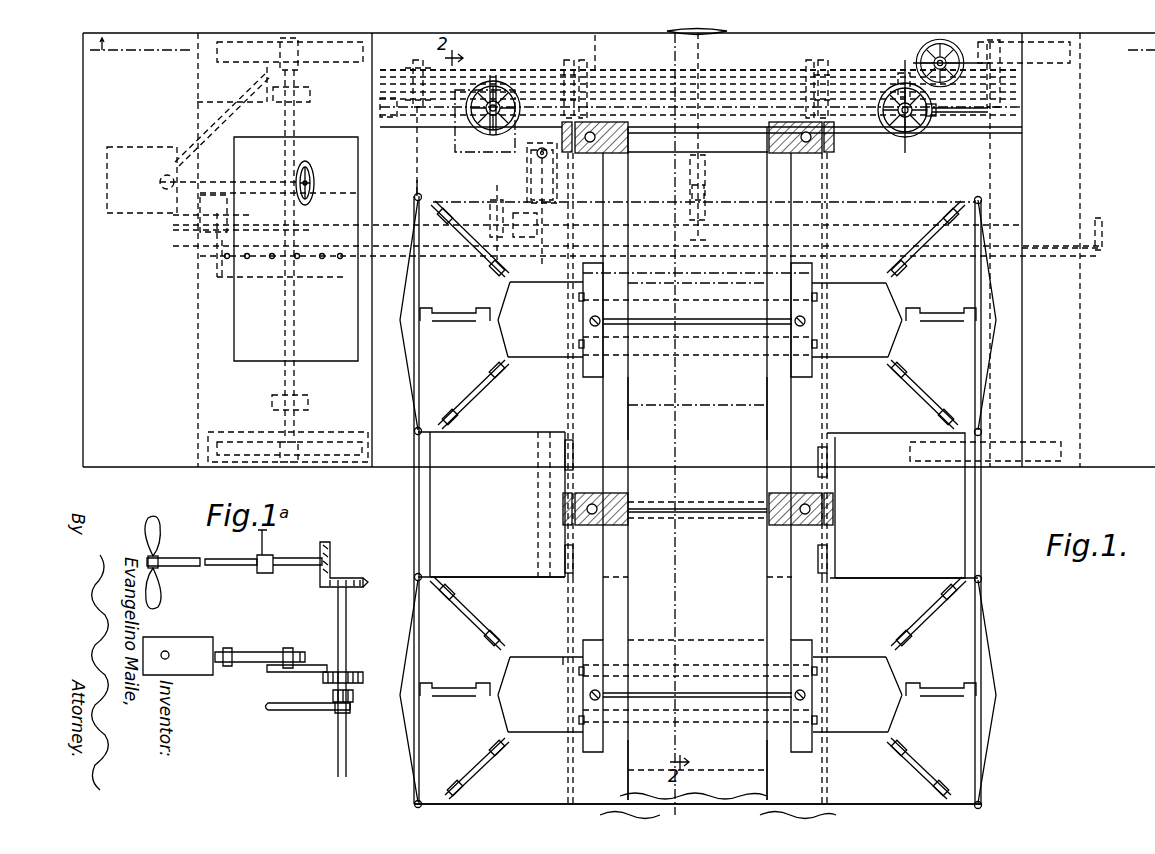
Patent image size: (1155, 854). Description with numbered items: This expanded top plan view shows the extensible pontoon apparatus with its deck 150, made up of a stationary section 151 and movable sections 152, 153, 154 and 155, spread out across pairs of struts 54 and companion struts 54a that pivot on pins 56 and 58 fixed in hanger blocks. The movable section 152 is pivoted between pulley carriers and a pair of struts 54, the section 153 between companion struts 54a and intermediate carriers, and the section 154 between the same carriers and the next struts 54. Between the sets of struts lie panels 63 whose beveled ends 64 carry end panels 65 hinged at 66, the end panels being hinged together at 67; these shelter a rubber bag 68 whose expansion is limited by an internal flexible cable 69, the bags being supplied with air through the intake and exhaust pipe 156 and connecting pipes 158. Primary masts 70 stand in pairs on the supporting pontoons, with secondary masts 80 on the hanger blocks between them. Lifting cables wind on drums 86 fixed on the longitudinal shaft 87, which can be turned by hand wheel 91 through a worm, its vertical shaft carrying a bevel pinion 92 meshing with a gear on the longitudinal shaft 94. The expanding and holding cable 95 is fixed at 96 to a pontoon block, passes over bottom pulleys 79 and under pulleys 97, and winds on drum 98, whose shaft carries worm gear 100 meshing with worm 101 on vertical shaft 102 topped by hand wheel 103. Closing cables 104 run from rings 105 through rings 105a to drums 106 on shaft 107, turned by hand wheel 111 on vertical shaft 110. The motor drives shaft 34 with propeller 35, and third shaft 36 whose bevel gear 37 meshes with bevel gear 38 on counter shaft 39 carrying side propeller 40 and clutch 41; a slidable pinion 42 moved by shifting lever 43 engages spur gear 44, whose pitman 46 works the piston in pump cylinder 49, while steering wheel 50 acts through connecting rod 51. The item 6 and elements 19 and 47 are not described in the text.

In FIG. 1, the section line 6 is at (98, 54).
In FIG. 1, the shaft 19 is at (574, 155).
In FIG. 1, the shaft 34 is at (1052, 250).
In FIG. 1, the propeller 35 is at (1102, 241).
In FIG. 1, the third shaft 36 is at (416, 196).
In FIG. 1A, the third shaft 36 is at (338, 753).
In FIG. 1A, the bevel gear 37 is at (364, 576).
In FIG. 1A, the companion bevel gear 38 is at (332, 538).
In FIG. 1A, the counter shaft 39 is at (225, 568).
In FIG. 1A, the propeller 40 is at (160, 522).
In FIG. 1A, the clutch 41 is at (266, 574).
In FIG. 1A, the slidable pinion 42 is at (333, 695).
In FIG. 1A, the shifting lever 43 is at (302, 711).
In FIG. 1A, the spur gear 44 is at (358, 671).
In FIG. 1A, the pitman 46 is at (290, 672).
In FIG. 1A, the shaft 47 is at (267, 651).
In FIG. 1A, the pump cylinder 49 is at (191, 641).
In FIG. 1, the steering wheel 50 is at (309, 175).
In FIG. 1, the connecting rod 51 is at (191, 140).
In FIG. 1, the strut 54 is at (617, 192).
In FIG. 1, the companion strut 54a is at (620, 394).
In FIG. 1, the pin 56 is at (579, 297).
In FIG. 1, the pin 58 is at (579, 345).
In FIG. 1, the panel 63 is at (508, 586).
In FIG. 1, the beveled end 64 is at (466, 618).
In FIG. 1, the end panel 65 is at (427, 348).
In FIG. 1, the hinge 66 is at (462, 411).
In FIG. 1, the hinge 67 is at (470, 311).
In FIG. 1, the rubber bag 68 is at (565, 660).
In FIG. 1, the flexible cable 69 is at (594, 393).
In FIG. 1, the primary mast 70 is at (601, 154).
In FIG. 1, the bottom pulley 79 is at (835, 154).
In FIG. 1, the secondary mast 80 is at (589, 322).
In FIG. 1, the drum 86 is at (599, 60).
In FIG. 1, the longitudinal shaft 87 is at (750, 76).
In FIG. 1, the hand wheel 91 is at (958, 47).
In FIG. 1, the bevel pinion 92 is at (936, 110).
In FIG. 1, the longitudinal shaft 94 is at (665, 80).
In FIG. 1, the expanding and holding cable 95 is at (567, 774).
In FIG. 1, the fixed end 96 is at (932, 48).
In FIG. 1, the pulley 97 is at (573, 455).
In FIG. 1, the drum 98 is at (569, 64).
In FIG. 1, the worm gear 100 is at (913, 63).
In FIG. 1, the worm 101 is at (930, 118).
In FIG. 1, the vertical shaft 102 is at (897, 132).
In FIG. 1, the hand wheel 103 is at (918, 135).
In FIG. 1, the closing cable 104 is at (414, 777).
In FIG. 1, the ring 105 is at (414, 805).
In FIG. 1, the ring 105a is at (420, 196).
In FIG. 1, the drum 106 is at (383, 64).
In FIG. 1, the longitudinal shaft 107 is at (424, 102).
In FIG. 1, the vertical shaft 110 is at (480, 128).
In FIG. 1, the hand wheel 111 is at (498, 128).
In FIG. 1, the deck 150 is at (382, 68).
In FIG. 1, the stationary section 151 is at (414, 140).
In FIG. 1, the movable section 152 is at (757, 233).
In FIG. 1, the movable platform section 153 is at (760, 422).
In FIG. 1, the movable platform section 154 is at (762, 640).
In FIG. 1, the movable section 155 is at (800, 768).
In FIG. 1, the intake and exhaust pipe 156 is at (527, 165).
In FIG. 1, the connecting pipe 158 is at (548, 476).